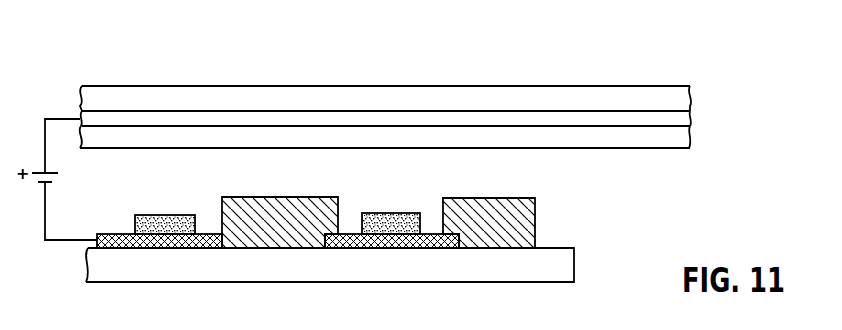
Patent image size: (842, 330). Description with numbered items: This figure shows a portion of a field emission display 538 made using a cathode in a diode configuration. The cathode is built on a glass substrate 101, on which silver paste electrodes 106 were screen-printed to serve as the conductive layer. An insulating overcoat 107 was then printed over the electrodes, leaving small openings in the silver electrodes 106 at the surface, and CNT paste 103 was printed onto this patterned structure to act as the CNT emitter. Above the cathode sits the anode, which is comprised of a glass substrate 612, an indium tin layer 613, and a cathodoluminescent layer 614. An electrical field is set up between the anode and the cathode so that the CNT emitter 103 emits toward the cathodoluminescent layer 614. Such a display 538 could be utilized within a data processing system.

The field emission display 538 is at (514, 69).
The glass substrate 612 is at (694, 92).
The indium tin layer 613 is at (693, 113).
The cathodoluminescent layer 614 is at (693, 137).
The glass substrate 101 is at (344, 275).
The silver paste electrodes 106 is at (118, 233).
The insulating overcoat 107 is at (537, 224).
The CNT paste 103 is at (398, 214).